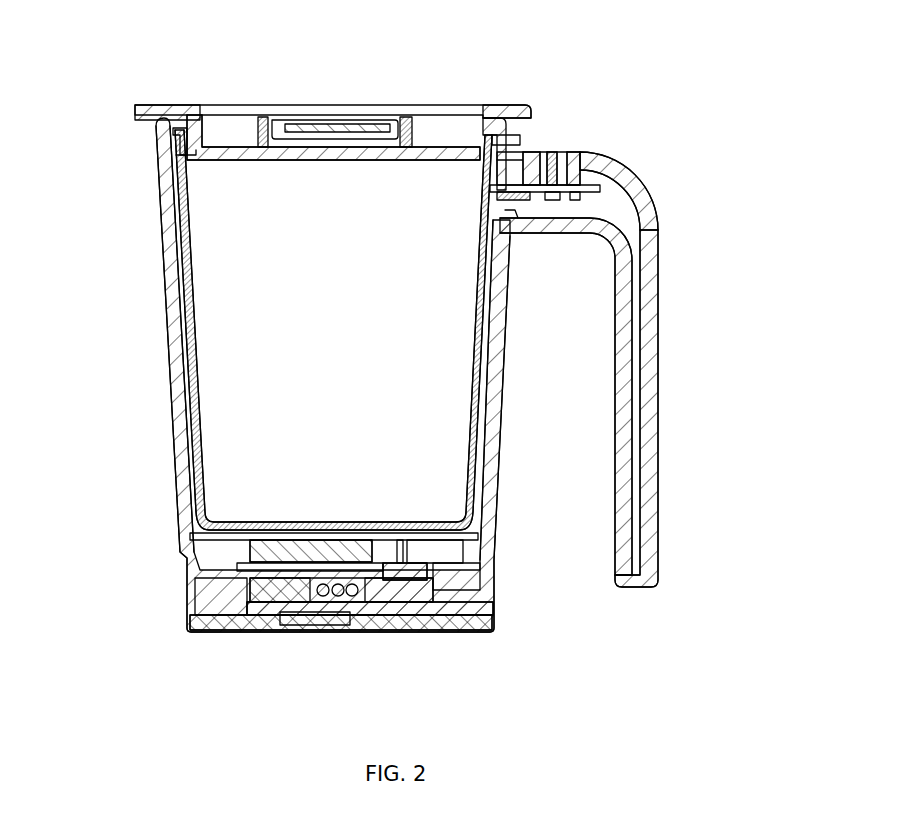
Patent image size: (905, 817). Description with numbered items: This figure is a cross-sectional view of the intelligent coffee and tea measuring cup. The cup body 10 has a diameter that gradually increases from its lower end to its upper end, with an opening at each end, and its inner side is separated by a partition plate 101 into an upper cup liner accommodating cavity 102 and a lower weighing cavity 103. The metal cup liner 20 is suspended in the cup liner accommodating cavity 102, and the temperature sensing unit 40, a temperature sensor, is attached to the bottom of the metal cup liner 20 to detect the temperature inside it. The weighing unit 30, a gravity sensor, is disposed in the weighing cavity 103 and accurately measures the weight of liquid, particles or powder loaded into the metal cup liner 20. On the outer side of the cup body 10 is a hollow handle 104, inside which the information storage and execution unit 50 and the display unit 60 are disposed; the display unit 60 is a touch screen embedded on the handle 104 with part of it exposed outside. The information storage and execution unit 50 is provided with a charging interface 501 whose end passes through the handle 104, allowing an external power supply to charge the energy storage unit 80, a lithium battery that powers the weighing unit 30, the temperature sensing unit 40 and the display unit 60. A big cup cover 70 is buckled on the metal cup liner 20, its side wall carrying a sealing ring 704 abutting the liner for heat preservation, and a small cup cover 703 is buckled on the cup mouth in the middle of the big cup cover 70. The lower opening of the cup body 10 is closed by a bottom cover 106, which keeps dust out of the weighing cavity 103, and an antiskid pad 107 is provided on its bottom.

The cup body 10 is at (162, 263).
The metal cup liner 20 is at (193, 360).
The weighing unit 30 is at (420, 597).
The temperature sensing unit 40 is at (203, 535).
The information storage and execution unit 50 is at (623, 183).
The display unit 60 is at (565, 151).
The big cup cover 70 is at (160, 110).
The energy storage unit 80 is at (248, 557).
The partition plate 101 is at (440, 572).
The cup liner accommodating cavity 102 is at (210, 592).
The weighing cavity 103 is at (187, 423).
The handle 104 is at (660, 435).
The bottom cover 106 is at (415, 633).
The antiskid pad 107 is at (330, 632).
The charging interface 501 is at (480, 128).
The small cup cover 703 is at (322, 126).
The sealing ring 704 is at (185, 147).